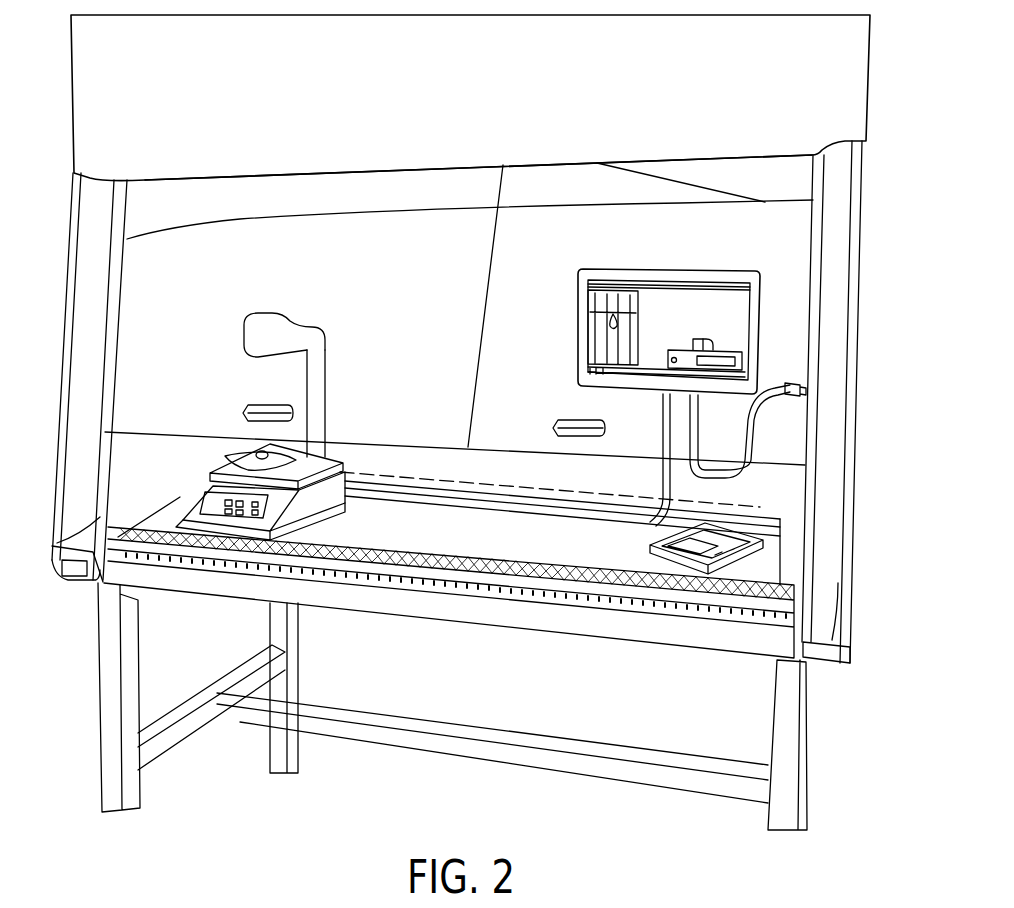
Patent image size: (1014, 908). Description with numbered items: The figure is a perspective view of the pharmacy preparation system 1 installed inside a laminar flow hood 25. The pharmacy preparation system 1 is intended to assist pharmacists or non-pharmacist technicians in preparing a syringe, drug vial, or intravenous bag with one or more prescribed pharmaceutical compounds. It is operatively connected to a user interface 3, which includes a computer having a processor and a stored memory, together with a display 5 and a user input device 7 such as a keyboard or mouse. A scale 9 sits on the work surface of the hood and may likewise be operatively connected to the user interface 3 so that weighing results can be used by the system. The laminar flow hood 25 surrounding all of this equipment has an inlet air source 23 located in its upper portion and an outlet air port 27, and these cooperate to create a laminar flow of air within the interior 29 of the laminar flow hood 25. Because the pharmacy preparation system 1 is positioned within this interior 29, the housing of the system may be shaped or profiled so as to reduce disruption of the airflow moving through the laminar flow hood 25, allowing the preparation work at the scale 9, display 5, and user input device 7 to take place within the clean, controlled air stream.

The pharmacy preparation system 1 is at (114, 391).
The user interface 3 is at (752, 348).
The display 5 is at (740, 289).
The user input device 7 is at (763, 560).
The scale 9 is at (57, 545).
The inlet air source 23 is at (145, 180).
The laminar flow hood 25 is at (130, 272).
The outlet air port 27 is at (780, 518).
The interior 29 is at (424, 230).